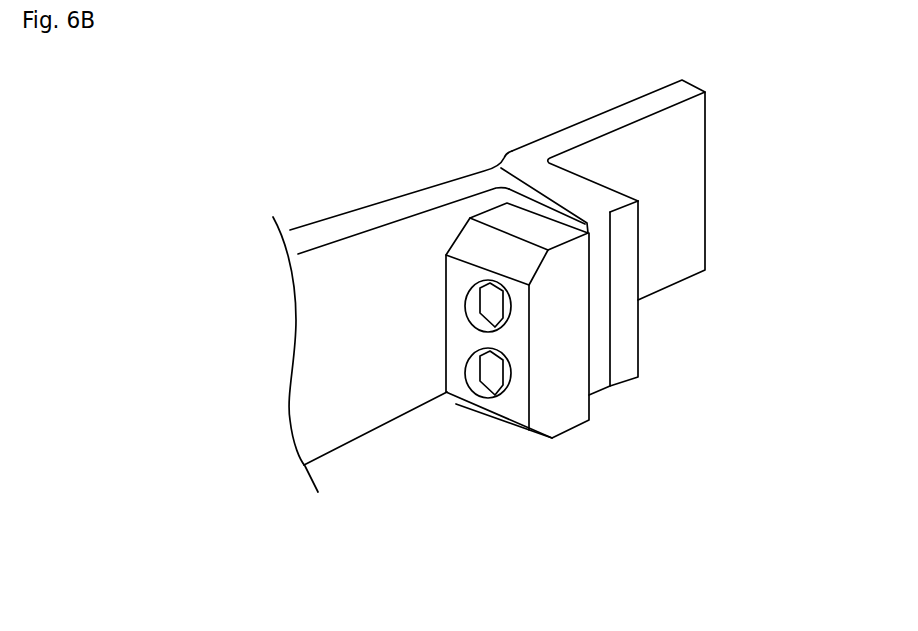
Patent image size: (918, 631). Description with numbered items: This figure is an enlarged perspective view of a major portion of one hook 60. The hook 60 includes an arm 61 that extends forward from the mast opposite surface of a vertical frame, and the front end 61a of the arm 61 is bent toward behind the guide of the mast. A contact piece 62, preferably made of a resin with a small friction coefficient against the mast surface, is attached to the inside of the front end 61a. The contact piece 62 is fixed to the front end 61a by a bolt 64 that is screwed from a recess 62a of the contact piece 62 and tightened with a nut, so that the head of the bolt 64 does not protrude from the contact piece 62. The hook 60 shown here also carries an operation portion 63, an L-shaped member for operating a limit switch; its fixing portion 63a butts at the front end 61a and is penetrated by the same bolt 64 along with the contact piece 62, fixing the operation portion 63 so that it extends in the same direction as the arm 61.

The hook 60 is at (398, 72).
The arm 61 is at (421, 182).
The front end 61a is at (545, 198).
The contact piece 62 is at (489, 209).
The recess 62a is at (468, 375).
The operation portion 63 is at (618, 107).
The fixing portion 63a is at (608, 187).
The bolt 64 is at (500, 310).